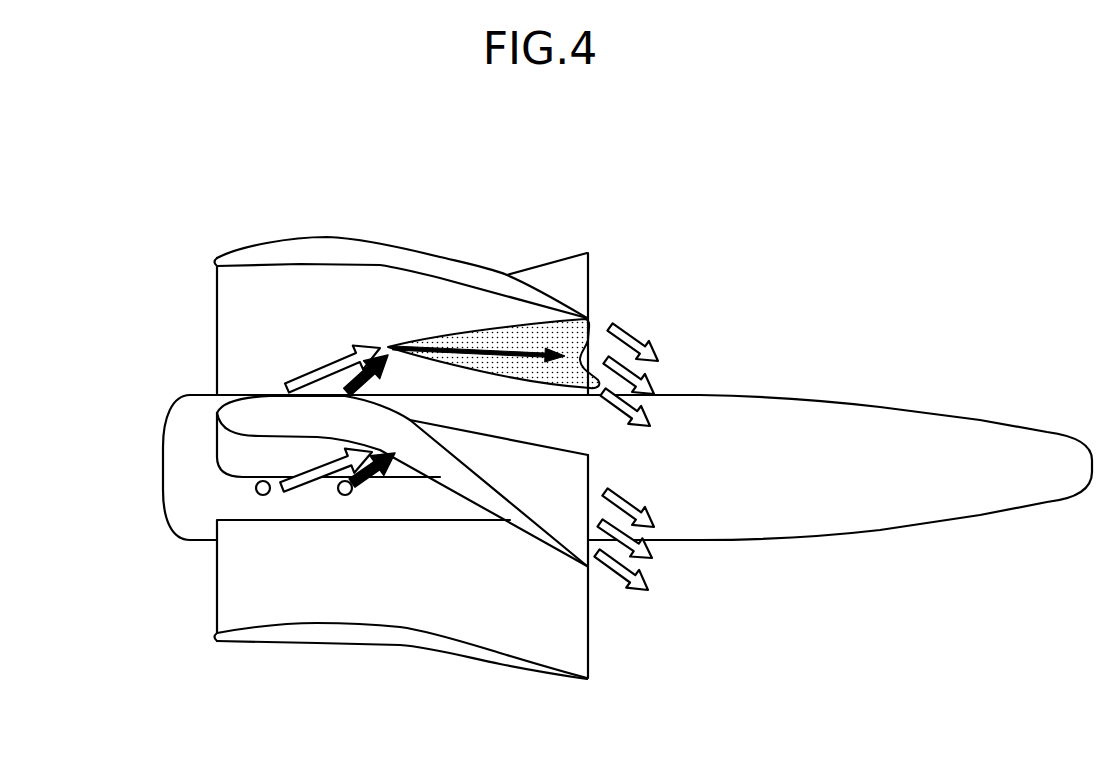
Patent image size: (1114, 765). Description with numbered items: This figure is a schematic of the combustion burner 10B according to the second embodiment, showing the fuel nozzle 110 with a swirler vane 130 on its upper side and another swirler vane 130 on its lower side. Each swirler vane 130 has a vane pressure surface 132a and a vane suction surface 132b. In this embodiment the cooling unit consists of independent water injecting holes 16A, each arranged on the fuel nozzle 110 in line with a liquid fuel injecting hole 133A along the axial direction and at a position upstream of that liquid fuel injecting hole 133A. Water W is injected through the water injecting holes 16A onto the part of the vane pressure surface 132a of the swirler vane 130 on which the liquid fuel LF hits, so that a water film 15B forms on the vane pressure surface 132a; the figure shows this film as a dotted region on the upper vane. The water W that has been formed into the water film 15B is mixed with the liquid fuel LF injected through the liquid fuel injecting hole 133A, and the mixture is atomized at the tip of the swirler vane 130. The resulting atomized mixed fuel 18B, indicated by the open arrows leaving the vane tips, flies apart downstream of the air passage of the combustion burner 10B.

The fuel nozzle 110 is at (900, 412).
The swirler vane 130 is at (330, 252).
The vane pressure surface 132a is at (407, 467).
The vane suction surface 132b is at (567, 470).
The water film 15B is at (450, 337).
The water W is at (328, 367).
The liquid fuel LF is at (380, 470).
The water injecting hole 16A is at (255, 489).
The liquid fuel injecting hole 133A is at (347, 496).
The atomized mixed fuel 18B is at (635, 337).
The combustion burner 10B is at (614, 185).